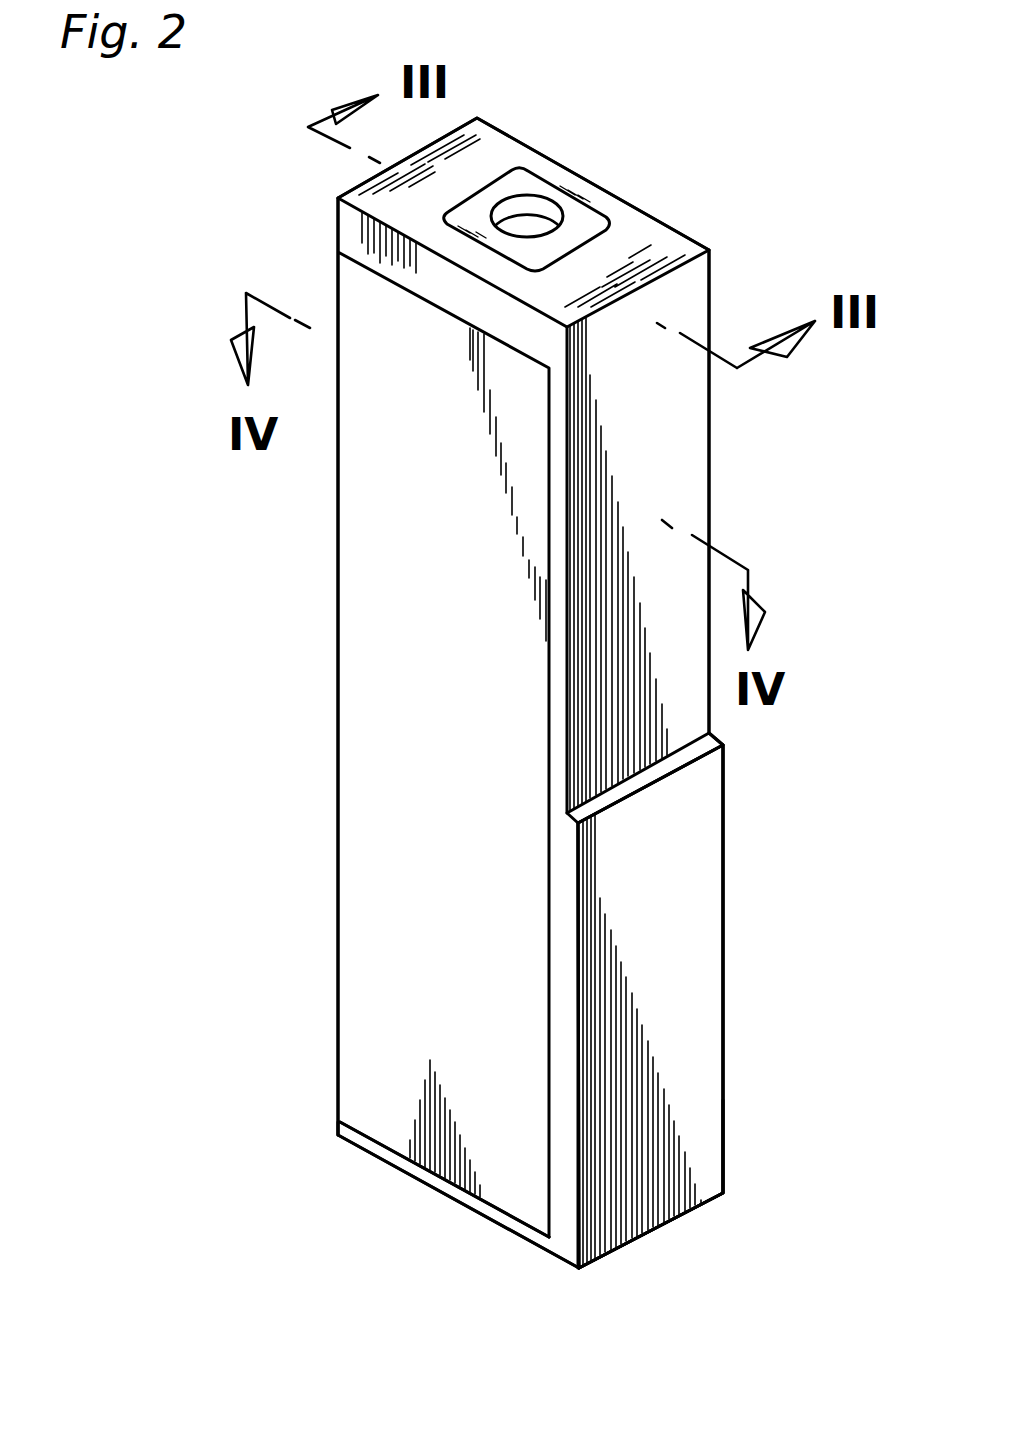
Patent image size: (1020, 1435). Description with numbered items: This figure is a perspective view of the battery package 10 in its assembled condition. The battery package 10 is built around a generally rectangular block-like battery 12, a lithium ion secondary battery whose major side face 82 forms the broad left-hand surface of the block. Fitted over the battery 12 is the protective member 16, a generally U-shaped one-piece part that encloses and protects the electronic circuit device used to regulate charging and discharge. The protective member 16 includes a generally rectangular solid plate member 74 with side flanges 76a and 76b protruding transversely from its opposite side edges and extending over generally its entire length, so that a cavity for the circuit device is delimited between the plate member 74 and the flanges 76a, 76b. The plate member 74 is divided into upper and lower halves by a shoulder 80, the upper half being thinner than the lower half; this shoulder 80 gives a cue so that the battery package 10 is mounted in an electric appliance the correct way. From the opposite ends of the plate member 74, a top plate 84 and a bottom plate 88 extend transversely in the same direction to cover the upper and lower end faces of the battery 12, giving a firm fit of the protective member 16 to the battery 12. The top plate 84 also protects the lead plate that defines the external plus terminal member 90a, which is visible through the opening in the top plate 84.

The battery package 10 is at (338, 947).
The battery 12 is at (390, 1128).
The protective member 16 is at (711, 1199).
The plate member 74 is at (671, 881).
The side flange 76a is at (560, 997).
The side flange 76b is at (723, 960).
The shoulder 80 is at (682, 758).
The major side face 82 is at (368, 723).
The top plate 84 is at (655, 237).
The bottom plate 88 is at (493, 1213).
The external plus terminal member 90a is at (530, 220).